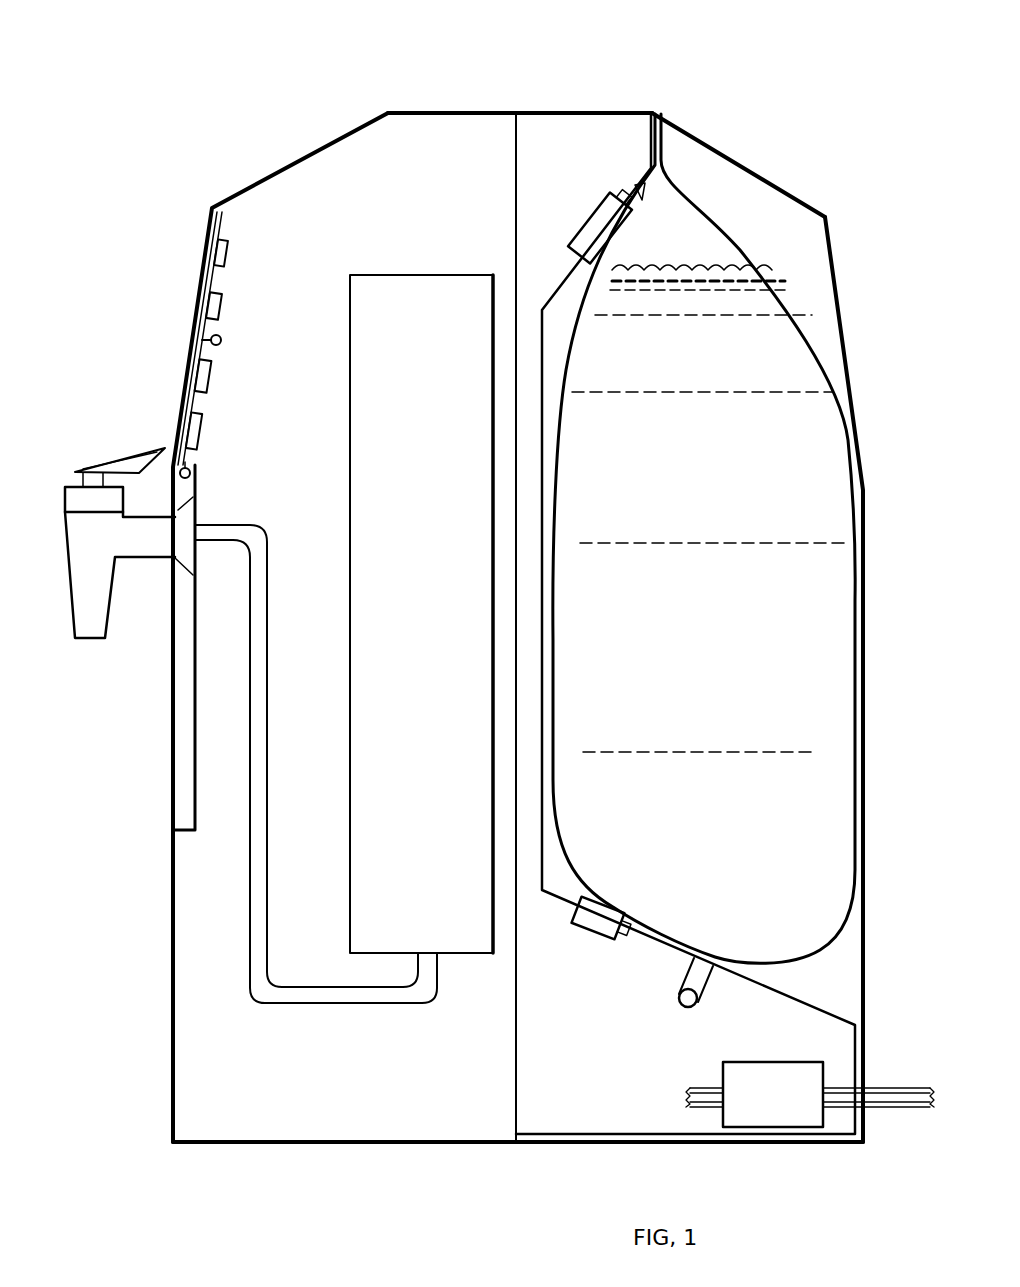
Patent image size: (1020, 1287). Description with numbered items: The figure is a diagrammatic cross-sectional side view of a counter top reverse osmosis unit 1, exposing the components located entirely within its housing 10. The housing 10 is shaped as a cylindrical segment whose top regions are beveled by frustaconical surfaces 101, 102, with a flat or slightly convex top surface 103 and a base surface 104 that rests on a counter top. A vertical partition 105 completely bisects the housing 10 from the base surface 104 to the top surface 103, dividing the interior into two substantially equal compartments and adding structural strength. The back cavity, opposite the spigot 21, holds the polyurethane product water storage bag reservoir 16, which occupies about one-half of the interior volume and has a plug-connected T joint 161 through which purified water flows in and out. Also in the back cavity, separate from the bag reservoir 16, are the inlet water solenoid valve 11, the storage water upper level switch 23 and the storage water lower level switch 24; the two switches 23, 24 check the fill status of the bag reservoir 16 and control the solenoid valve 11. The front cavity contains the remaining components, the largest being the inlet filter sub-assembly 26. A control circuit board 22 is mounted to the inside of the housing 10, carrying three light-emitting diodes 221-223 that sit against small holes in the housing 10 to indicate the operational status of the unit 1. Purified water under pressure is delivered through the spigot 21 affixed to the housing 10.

The counter top reverse osmosis unit 1 is at (812, 50).
The housing 10 is at (313, 182).
The frustaconical surface 101 is at (840, 290).
The frustaconical surface 102 is at (752, 172).
The top surface 103 is at (491, 113).
The base surface 104 is at (406, 1146).
The vertical partition 105 is at (516, 1045).
The inlet water solenoid valve 11 is at (787, 1109).
The water storage bag reservoir 16 is at (710, 595).
The T joint 161 is at (680, 1003).
The spigot 21 is at (106, 549).
The control circuit board 22 is at (213, 388).
The light-emitting diodes 221-223 is at (198, 479).
The storage water upper level switch 23 is at (585, 218).
The storage water lower level switch 24 is at (592, 924).
The inlet filter sub-assembly 26 is at (446, 577).